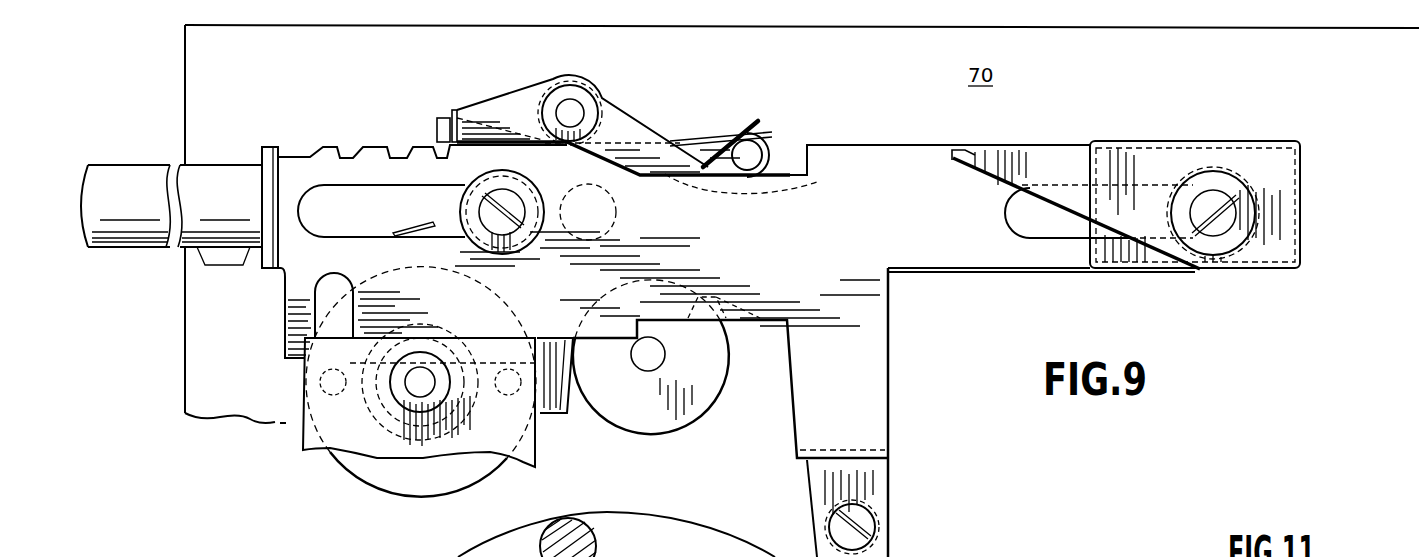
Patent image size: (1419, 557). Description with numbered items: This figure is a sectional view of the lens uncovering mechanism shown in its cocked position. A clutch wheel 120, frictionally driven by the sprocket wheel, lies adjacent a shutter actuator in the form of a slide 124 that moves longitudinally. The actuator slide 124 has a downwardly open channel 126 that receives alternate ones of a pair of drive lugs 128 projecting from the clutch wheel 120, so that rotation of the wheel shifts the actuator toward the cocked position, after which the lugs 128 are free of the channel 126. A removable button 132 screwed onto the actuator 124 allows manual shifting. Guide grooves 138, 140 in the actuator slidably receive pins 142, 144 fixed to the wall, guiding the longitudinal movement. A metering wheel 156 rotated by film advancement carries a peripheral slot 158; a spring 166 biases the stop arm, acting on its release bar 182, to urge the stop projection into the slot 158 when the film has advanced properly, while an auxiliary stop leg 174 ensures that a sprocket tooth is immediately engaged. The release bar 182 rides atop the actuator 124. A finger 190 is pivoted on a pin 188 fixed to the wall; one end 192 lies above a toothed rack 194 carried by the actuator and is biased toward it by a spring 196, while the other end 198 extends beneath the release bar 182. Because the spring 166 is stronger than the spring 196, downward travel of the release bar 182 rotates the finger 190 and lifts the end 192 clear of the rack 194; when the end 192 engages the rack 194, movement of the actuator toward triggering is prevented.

In FIG. 9, the clutch wheel 120 is at (405, 477).
In FIG. 9, the actuator slide 124 is at (793, 239).
In FIG. 9, the channel 126 is at (326, 292).
In FIG. 9, the drive lugs 128 is at (320, 381).
In FIG. 9, the removable button 132 is at (130, 235).
In FIG. 9, the guide groove 138 is at (327, 218).
In FIG. 9, the guide groove 140 is at (1020, 220).
In FIG. 9, the pin 142 is at (505, 225).
In FIG. 9, the pin 144 is at (1220, 202).
In FIG. 9, the metering wheel 156 is at (678, 407).
In FIG. 9, the slot 158 is at (748, 320).
In FIG. 9, the spring 166 is at (757, 121).
In FIG. 9, the auxiliary stop leg 174 is at (568, 402).
In FIG. 9, the release bar 182 is at (755, 155).
In FIG. 9, the pin 188 is at (578, 110).
In FIG. 11, the pin 188 is at (600, 546).
In FIG. 9, the finger 190 is at (634, 127).
In FIG. 9, the end of finger 192 is at (448, 116).
In FIG. 9, the toothed rack 194 is at (340, 148).
In FIG. 9, the spring 196 is at (540, 138).
In FIG. 9, the other end of finger 198 is at (763, 182).